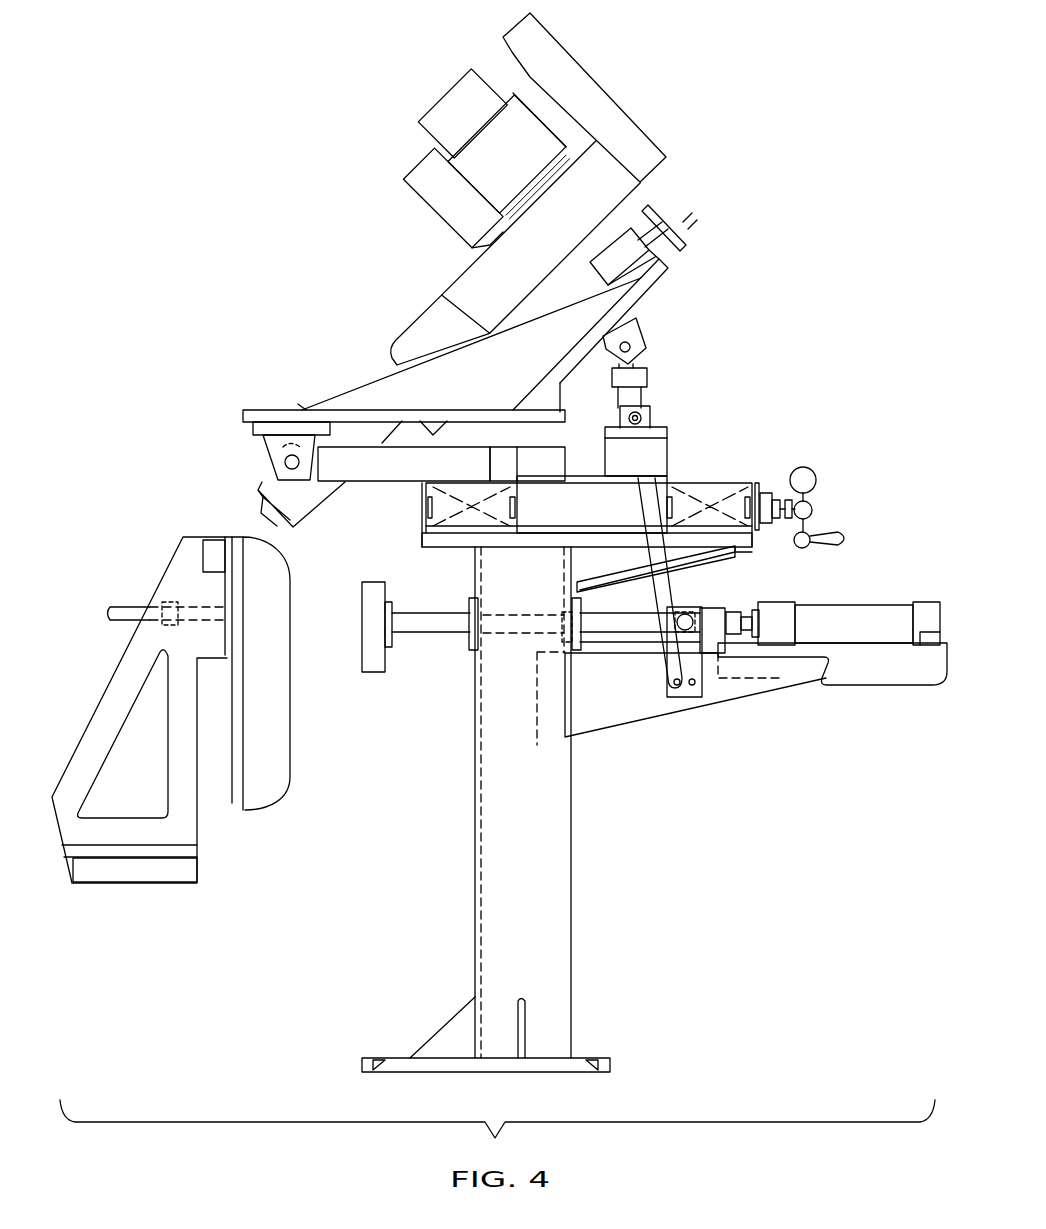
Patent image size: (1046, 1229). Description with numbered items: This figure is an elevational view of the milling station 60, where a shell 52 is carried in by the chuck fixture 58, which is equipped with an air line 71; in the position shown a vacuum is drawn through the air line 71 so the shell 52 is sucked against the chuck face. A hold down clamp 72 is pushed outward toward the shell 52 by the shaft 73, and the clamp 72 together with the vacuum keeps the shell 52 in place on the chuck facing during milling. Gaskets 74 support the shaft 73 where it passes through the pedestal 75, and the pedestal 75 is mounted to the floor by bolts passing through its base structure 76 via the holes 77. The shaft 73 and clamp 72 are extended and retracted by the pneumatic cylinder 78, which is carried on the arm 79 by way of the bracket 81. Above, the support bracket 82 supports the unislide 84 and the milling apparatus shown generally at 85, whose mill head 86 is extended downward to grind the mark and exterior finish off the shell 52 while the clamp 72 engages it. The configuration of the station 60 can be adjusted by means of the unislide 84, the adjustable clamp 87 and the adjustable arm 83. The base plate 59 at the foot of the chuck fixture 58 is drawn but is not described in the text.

The shell 52 is at (273, 800).
The chuck fixture 58 is at (102, 698).
The base plate 59 is at (185, 886).
The milling station 60 is at (795, 181).
The air line 71 is at (133, 605).
The hold down clamp 72 is at (370, 673).
The shaft 73 is at (430, 637).
The gaskets 74 is at (468, 607).
The pedestal 75 is at (476, 858).
The base structure 76 is at (395, 1057).
The holes 77 is at (378, 1058).
The pneumatic cylinder 78 is at (847, 597).
The arm 79 is at (645, 719).
The bracket 81 is at (703, 686).
The support bracket 82 is at (652, 288).
The adjustable arm 83 is at (690, 586).
The unislide 84 is at (623, 238).
The milling apparatus 85 is at (520, 25).
The mill head 86 is at (258, 488).
The adjustable clamp 87 is at (818, 505).